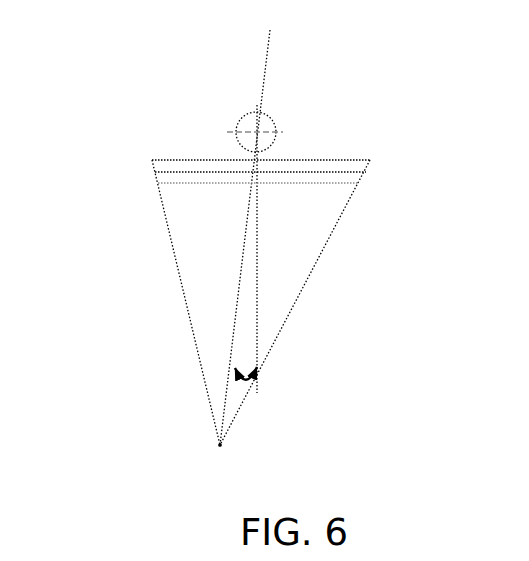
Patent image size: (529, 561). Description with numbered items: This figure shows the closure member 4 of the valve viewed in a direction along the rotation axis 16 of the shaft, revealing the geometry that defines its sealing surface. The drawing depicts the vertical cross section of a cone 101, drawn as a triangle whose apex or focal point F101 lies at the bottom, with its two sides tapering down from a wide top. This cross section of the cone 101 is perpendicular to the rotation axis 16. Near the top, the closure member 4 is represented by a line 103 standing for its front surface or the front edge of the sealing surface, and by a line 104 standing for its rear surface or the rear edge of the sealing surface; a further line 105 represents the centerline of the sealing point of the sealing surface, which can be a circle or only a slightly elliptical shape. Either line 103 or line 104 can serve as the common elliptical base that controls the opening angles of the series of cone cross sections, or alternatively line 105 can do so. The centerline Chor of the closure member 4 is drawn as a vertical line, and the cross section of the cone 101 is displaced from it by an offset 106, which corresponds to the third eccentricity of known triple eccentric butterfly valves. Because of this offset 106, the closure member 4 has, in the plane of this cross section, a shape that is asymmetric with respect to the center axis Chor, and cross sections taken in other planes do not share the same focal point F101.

The closure member 4 is at (138, 148).
The rotation axis 16 is at (245, 127).
The cone 101 is at (173, 362).
The line representing a front surface of the closure member 103 is at (148, 185).
The line representing a rear surface of the closure member 104 is at (373, 162).
The line representing a centerline of a sealing point 105 is at (295, 178).
The offset 106 is at (248, 397).
The focal point F101 is at (216, 446).
The centerline of the closure member Chor is at (268, 305).